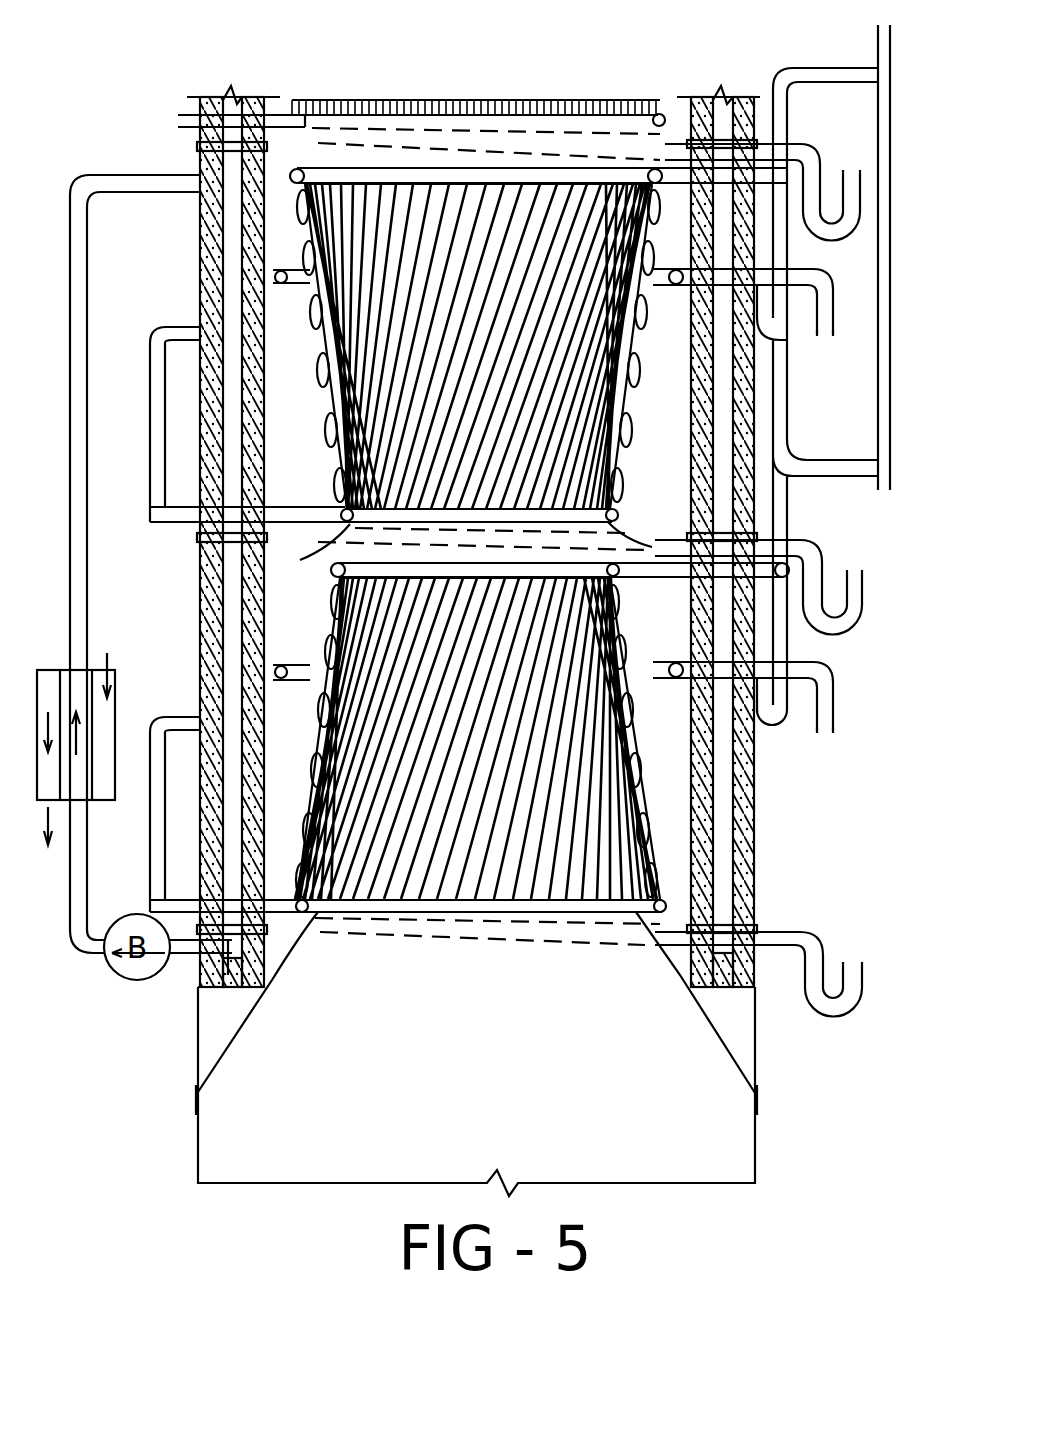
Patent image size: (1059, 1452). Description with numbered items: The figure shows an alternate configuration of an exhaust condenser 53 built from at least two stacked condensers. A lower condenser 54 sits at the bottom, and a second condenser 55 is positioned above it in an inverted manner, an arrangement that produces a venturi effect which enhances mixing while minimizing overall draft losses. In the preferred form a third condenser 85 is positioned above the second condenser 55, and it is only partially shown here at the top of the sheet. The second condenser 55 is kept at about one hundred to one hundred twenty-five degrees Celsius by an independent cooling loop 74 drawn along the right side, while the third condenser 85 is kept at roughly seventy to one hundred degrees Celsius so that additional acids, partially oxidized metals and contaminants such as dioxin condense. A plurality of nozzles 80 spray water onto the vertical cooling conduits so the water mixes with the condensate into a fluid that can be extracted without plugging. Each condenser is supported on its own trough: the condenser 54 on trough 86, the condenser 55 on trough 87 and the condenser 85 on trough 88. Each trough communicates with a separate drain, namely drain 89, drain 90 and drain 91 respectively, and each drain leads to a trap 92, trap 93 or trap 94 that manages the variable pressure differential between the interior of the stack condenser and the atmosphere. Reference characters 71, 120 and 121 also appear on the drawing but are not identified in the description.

The exhaust condenser 53 is at (410, 1104).
The condenser 54 is at (542, 793).
The second condenser 55 is at (520, 294).
The return pipe 71 is at (786, 751).
The independent cooling loop 74 is at (810, 366).
The nozzle 80 is at (496, 476).
The third condenser 85 is at (421, 91).
The trough 86 is at (408, 978).
The trough 87 is at (239, 570).
The trough 88 is at (712, 127).
The drain 89 is at (764, 935).
The drain 90 is at (752, 540).
The drain 91 is at (827, 161).
The trap 92 is at (847, 1027).
The trap 93 is at (843, 575).
The trap 94 is at (853, 167).
The lower pipe open end 120 is at (853, 762).
The upper pipe open end 121 is at (844, 345).